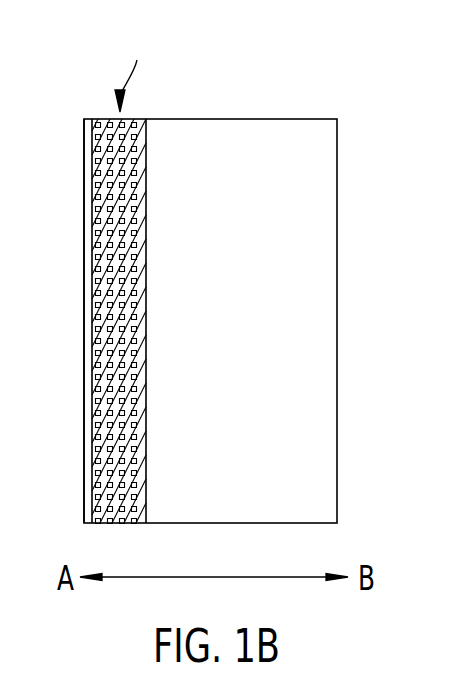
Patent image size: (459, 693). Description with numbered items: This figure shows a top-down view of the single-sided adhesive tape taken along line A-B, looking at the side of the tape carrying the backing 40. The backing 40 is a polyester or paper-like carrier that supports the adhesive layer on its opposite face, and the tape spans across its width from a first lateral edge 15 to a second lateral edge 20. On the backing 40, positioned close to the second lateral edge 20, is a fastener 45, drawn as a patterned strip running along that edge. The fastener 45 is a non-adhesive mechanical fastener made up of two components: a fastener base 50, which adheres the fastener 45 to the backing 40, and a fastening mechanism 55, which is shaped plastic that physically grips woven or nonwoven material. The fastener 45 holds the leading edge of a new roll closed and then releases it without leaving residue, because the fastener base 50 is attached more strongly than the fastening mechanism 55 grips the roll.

The first lateral edge 15 is at (337, 252).
The second lateral edge 20 is at (83, 300).
The backing 40 is at (321, 422).
The fastener 45 is at (131, 73).
The fastener base 50 is at (98, 132).
The fastening mechanism 55 is at (98, 196).